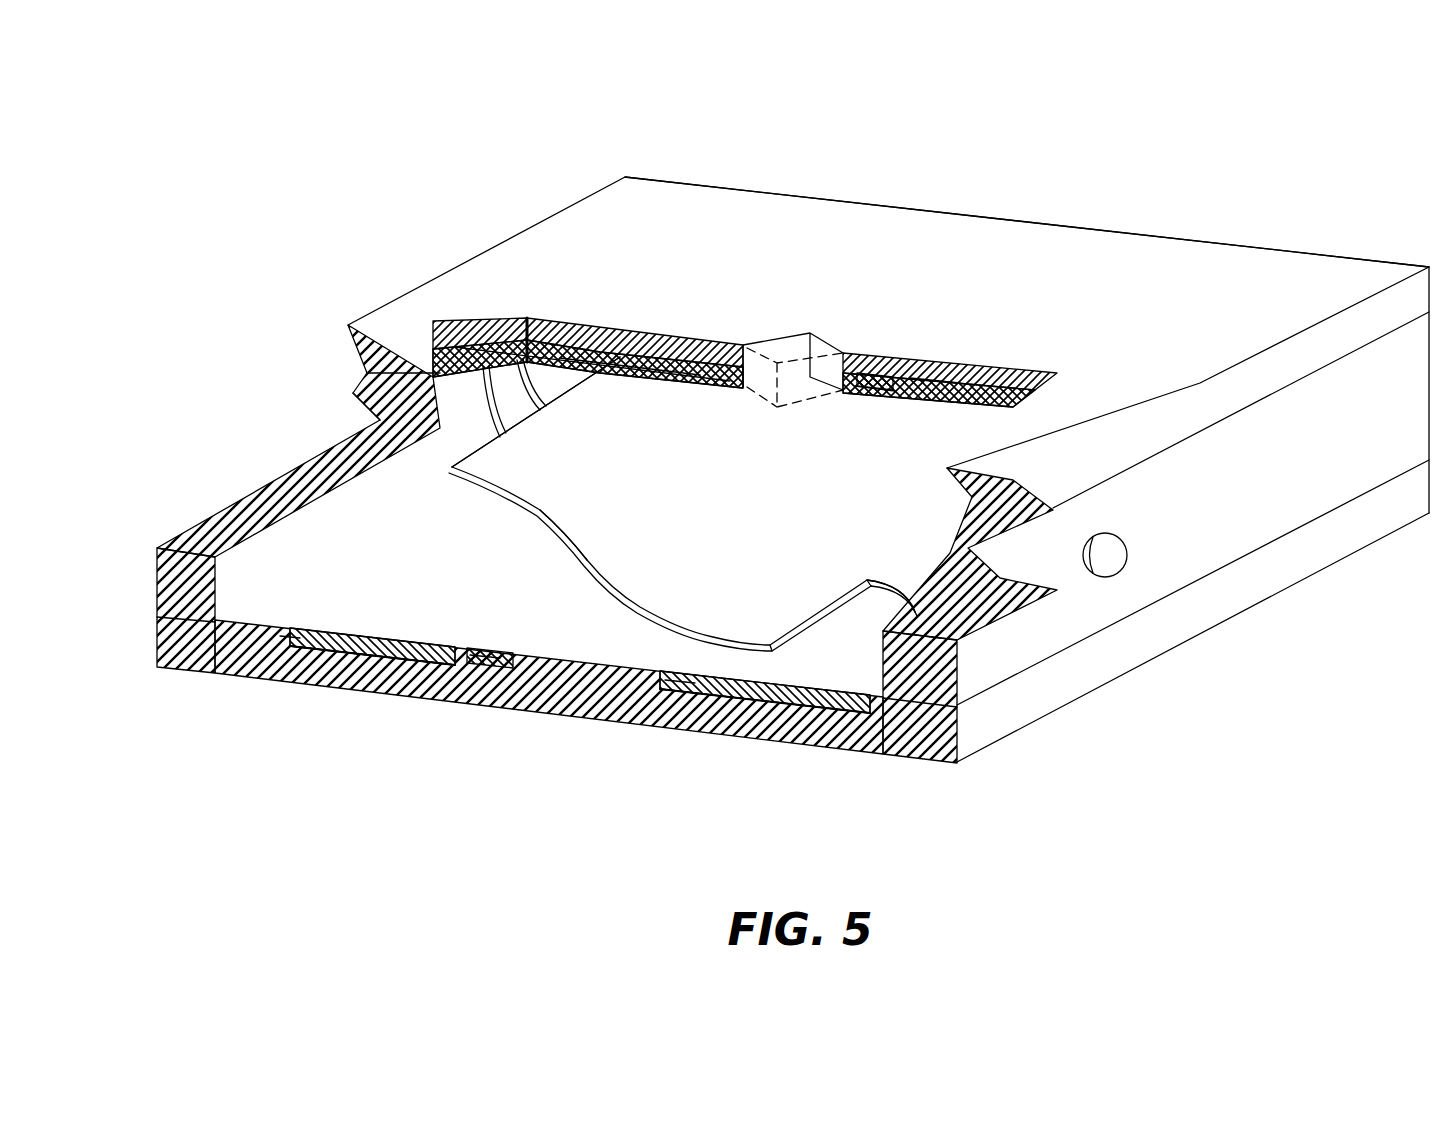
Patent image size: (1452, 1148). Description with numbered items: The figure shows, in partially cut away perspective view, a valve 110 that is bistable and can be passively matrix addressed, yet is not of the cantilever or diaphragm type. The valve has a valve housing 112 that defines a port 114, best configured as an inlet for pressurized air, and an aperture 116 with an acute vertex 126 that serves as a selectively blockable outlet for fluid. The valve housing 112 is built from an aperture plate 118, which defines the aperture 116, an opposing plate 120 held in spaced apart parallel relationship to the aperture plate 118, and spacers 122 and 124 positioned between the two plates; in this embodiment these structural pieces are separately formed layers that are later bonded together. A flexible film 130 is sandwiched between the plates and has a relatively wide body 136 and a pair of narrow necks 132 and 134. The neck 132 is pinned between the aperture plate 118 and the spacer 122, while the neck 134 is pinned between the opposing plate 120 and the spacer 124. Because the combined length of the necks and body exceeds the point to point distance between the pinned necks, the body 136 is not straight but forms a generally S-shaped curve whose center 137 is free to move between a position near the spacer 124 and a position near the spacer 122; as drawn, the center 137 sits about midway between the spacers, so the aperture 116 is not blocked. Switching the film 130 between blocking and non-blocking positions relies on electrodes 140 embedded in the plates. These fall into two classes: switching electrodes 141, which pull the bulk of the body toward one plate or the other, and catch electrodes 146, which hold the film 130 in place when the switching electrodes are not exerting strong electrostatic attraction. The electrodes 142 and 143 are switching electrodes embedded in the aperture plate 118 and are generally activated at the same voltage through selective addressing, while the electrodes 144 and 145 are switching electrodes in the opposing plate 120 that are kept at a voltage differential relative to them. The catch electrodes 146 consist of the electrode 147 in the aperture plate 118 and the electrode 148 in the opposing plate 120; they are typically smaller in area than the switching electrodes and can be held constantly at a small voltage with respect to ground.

The valve 110 is at (1146, 164).
The valve housing 112 is at (776, 197).
The port 114 is at (1105, 560).
The aperture 116 is at (792, 342).
The aperture plate 118 is at (1150, 262).
The opposing plate 120 is at (188, 663).
The spacer 122 is at (230, 517).
The spacer 124 is at (907, 687).
The acute vertex 126 is at (845, 368).
The flexible film 130 is at (537, 513).
The neck 132 is at (367, 372).
The neck 134 is at (905, 580).
The body 136 is at (694, 563).
The center 137 is at (717, 465).
The electrodes 140 is at (450, 350).
The switching electrodes 141 is at (730, 345).
The switching electrode 142 is at (598, 372).
The switching electrode 143 is at (920, 384).
The switching electrode 144 is at (290, 650).
The switching electrode 145 is at (680, 692).
The catch electrodes 146 is at (905, 357).
The catch electrode 147 is at (868, 393).
The catch electrode 148 is at (498, 670).